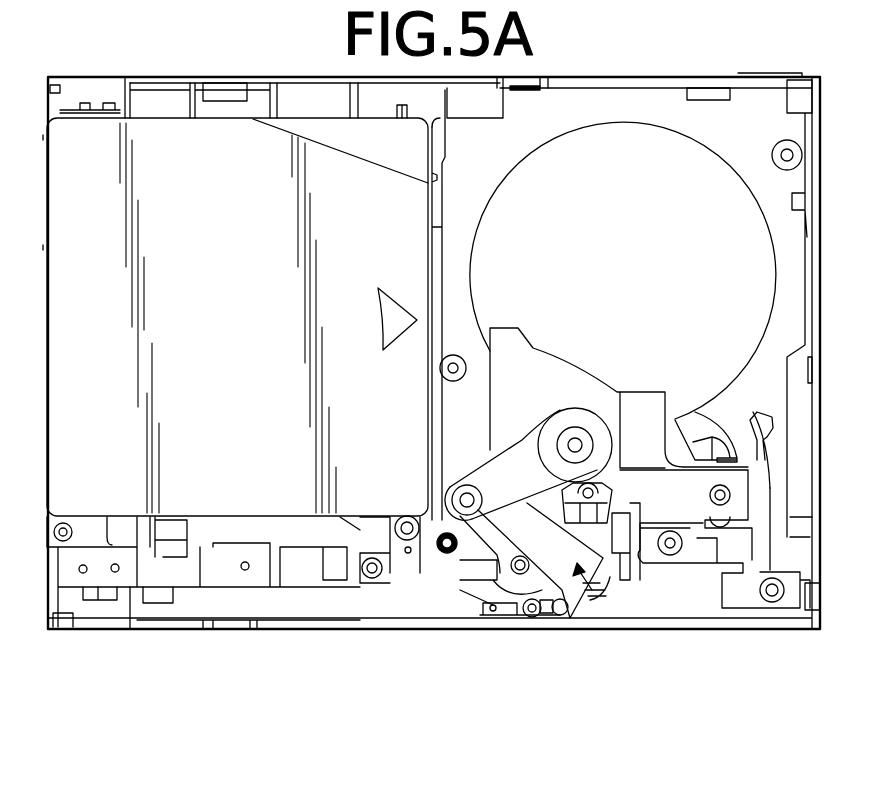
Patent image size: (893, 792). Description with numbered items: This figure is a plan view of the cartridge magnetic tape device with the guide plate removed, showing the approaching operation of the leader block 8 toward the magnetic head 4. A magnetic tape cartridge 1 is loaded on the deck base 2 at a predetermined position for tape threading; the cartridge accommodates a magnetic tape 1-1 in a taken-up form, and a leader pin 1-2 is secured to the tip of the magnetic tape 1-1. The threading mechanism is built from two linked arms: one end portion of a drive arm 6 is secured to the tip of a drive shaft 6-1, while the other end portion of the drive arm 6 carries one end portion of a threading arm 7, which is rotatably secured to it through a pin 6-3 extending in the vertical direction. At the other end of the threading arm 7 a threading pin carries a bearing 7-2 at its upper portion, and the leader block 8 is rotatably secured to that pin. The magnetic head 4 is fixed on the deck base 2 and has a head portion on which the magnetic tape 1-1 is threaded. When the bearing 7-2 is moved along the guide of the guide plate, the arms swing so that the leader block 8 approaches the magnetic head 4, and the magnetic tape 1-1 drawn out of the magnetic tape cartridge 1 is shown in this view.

The magnetic tape cartridge 1 is at (82, 403).
The magnetic tape 1-1 is at (473, 592).
The leader pin 1-2 is at (492, 613).
The deck base 2 is at (160, 570).
The magnetic head 4 is at (617, 593).
The drive arm 6 is at (537, 463).
The drive shaft 6-1 is at (575, 445).
The pin 6-3 is at (463, 490).
The threading arm 7 is at (593, 597).
The bearing 7-2 is at (555, 597).
The leader block 8 is at (517, 610).